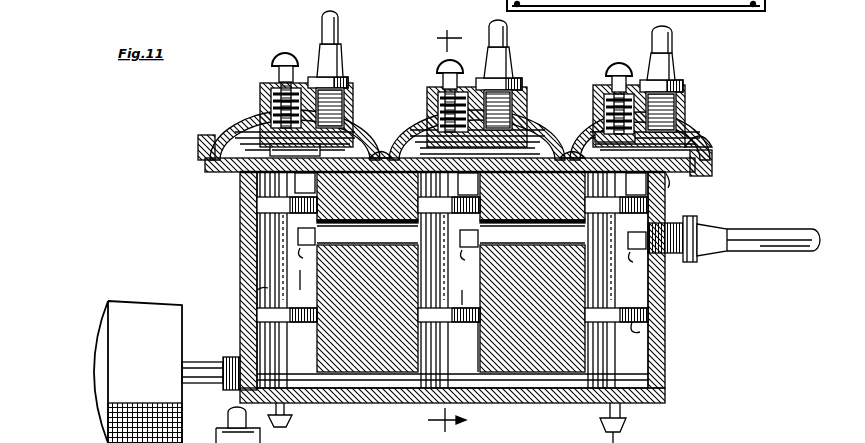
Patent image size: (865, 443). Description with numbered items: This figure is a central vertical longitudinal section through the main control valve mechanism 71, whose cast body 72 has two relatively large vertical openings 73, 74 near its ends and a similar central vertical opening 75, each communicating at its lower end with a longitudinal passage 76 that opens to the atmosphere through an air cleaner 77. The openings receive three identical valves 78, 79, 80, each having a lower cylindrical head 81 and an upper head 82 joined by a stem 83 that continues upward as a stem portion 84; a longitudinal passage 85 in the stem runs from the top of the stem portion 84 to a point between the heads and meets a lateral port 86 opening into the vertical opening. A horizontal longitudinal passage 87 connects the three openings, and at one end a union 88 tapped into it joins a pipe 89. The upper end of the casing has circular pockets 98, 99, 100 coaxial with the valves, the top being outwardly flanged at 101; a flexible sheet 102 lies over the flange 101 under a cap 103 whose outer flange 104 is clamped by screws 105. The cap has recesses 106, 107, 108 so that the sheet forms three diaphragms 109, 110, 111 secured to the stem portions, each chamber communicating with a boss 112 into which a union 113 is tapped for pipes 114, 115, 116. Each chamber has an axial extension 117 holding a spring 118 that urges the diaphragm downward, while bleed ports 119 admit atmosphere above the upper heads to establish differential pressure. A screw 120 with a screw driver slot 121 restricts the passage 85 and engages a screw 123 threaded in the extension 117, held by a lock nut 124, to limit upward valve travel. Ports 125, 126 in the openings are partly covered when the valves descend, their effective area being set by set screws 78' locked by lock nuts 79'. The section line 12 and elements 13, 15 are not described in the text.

The section line 12 is at (447, 226).
The contact strip 13 is at (295, 135).
The insulating block 15 is at (470, 184).
The main control valve mechanism 71 is at (242, 270).
The body 72 is at (245, 322).
The vertical opening 73 is at (262, 250).
The vertical opening 74 is at (663, 283).
The vertical opening 75 is at (418, 238).
The longitudinal passage 76 is at (530, 403).
The air cleaner 77 is at (133, 305).
The valve 78 is at (306, 280).
The set screw 78' is at (324, 423).
The valve 79 is at (667, 331).
The lock nut 79' is at (447, 423).
The valve 80 is at (466, 347).
The lower cylindrical head 81 is at (248, 330).
The upper head 82 is at (258, 201).
The stem 83 is at (257, 225).
The stem portion 84 is at (257, 184).
The longitudinal passage 85 is at (472, 239).
The lateral port 86 is at (472, 259).
The longitudinal passage 87 is at (532, 272).
The union 88 is at (700, 222).
The pipe 89 is at (756, 230).
The circular pocket 98 is at (213, 164).
The circular pocket 99 is at (575, 125).
The circular pocket 100 is at (378, 140).
The flange 101 is at (706, 176).
The flexible sheet 102 is at (712, 150).
The cap 103 is at (690, 107).
The outer flange 104 is at (705, 140).
The screws 105 is at (690, 120).
The circular recess 106 is at (235, 128).
The circular recess 107 is at (600, 100).
The circular recess 108 is at (540, 140).
The diaphragm 109 is at (308, 148).
The diaphragm 110 is at (626, 138).
The diaphragm 111 is at (480, 158).
The boss 112 is at (354, 102).
The union 113 is at (343, 63).
The pipe 114 is at (333, 36).
The pipe 115 is at (675, 42).
The pipe 116 is at (509, 38).
The axial extension 117 is at (265, 84).
The spring 118 is at (248, 112).
The bleed port 119 is at (668, 185).
The screw 120 is at (555, 148).
The screw driver slot 121 is at (473, 290).
The screw 123 is at (290, 52).
The lock nut 124 is at (277, 56).
The port 125 is at (255, 292).
The port 126 is at (664, 302).